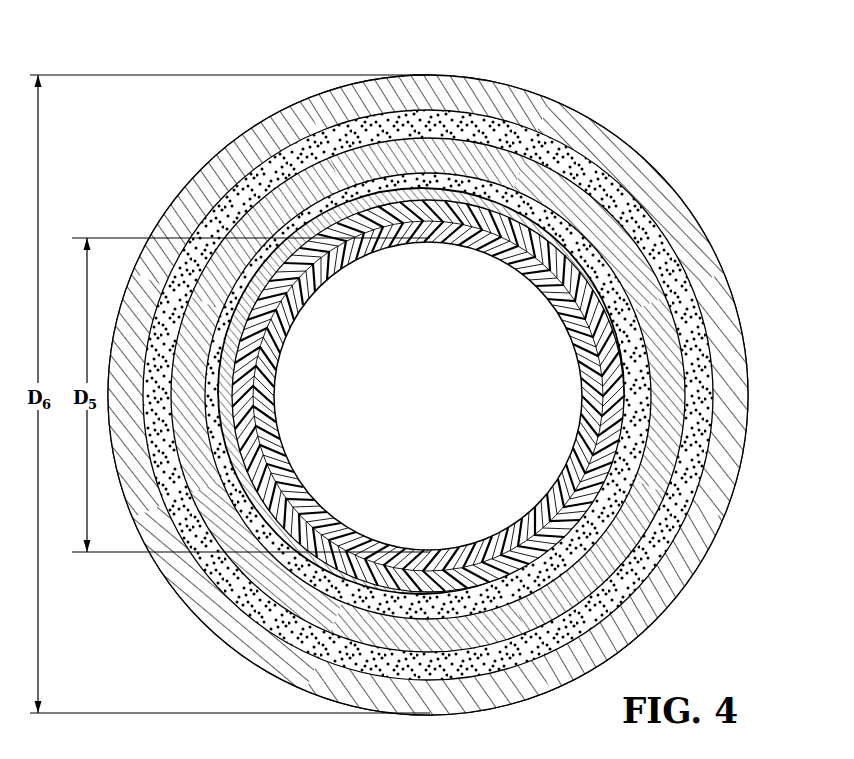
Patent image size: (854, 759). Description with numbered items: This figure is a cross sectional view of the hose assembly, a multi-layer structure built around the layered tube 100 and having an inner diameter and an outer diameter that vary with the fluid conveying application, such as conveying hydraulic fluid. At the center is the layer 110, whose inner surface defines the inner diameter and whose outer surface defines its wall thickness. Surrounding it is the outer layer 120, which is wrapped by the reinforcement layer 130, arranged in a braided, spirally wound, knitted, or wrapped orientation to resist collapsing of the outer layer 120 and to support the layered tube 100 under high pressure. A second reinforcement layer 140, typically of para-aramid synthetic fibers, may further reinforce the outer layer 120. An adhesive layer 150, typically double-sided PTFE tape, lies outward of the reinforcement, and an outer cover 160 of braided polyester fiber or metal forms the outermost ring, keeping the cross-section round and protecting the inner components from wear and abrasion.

The layered tube 100 is at (572, 85).
The layer 110 is at (273, 345).
The outer layer 120 is at (562, 263).
The reinforcement layer 130 is at (613, 283).
The second reinforcement layer 140 is at (662, 345).
The adhesive layer 150 is at (700, 357).
The outer cover 160 is at (732, 387).